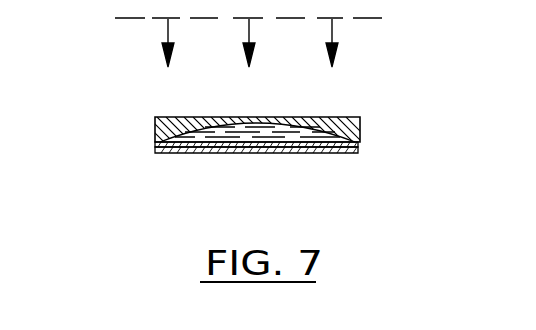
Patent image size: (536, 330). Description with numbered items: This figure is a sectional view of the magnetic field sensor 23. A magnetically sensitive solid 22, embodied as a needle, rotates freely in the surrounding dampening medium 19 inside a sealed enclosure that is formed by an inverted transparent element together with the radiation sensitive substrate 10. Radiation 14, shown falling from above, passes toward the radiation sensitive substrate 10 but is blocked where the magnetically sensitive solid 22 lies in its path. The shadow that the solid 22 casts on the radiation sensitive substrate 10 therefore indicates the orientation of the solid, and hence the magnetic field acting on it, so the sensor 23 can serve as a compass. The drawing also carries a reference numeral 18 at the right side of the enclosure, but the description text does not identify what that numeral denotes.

The radiation sensitive substrate 10 is at (156, 151).
The radiation 14 is at (367, 20).
The cover plate 18 is at (357, 145).
The dampening medium 19 is at (212, 140).
The magnetically sensitive solid 22 is at (273, 134).
The magnetic field sensor 23 is at (373, 112).